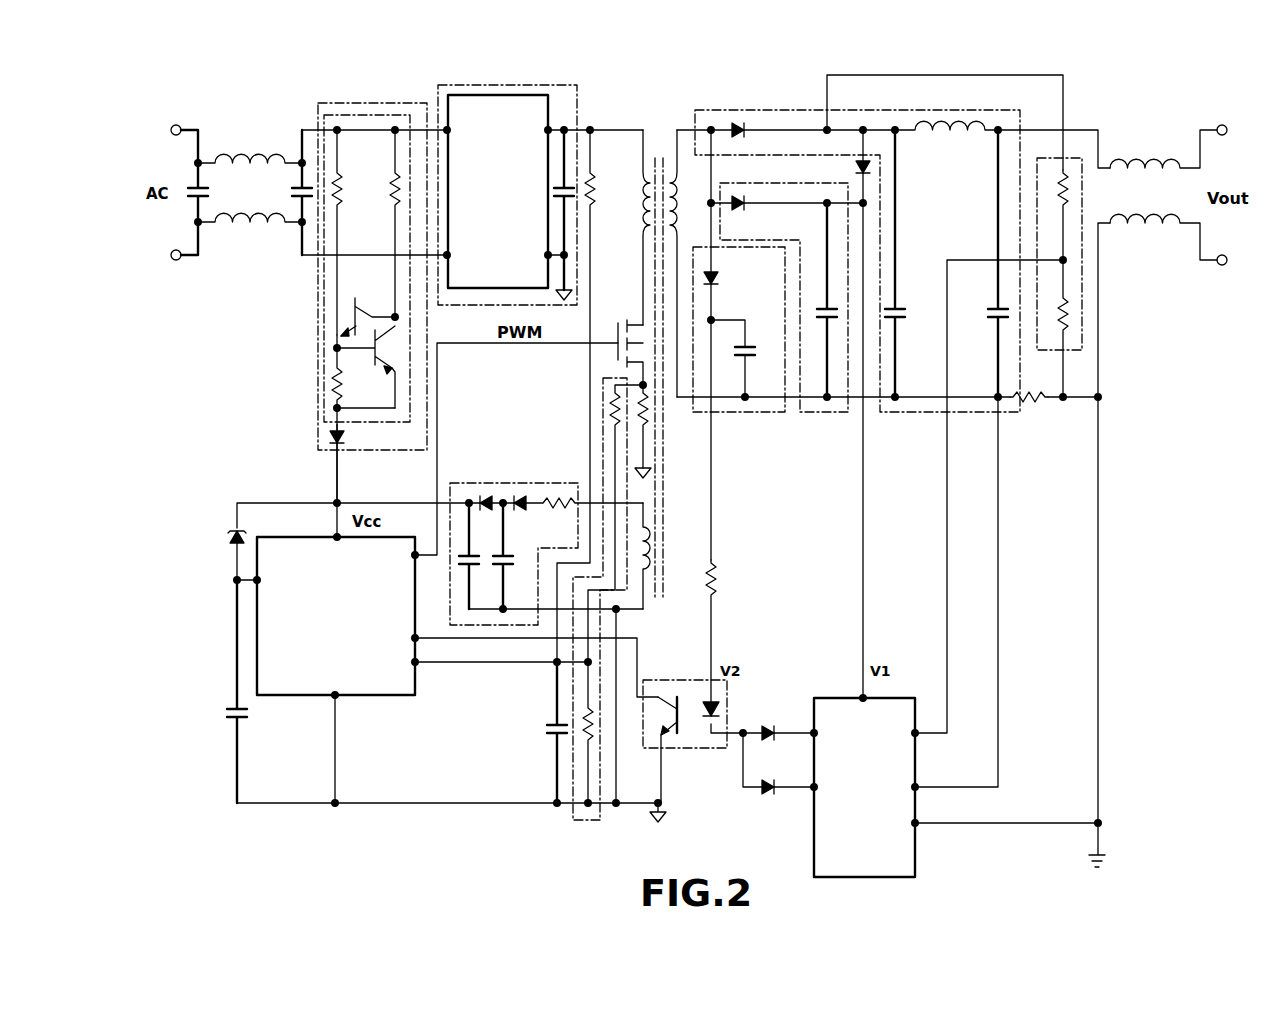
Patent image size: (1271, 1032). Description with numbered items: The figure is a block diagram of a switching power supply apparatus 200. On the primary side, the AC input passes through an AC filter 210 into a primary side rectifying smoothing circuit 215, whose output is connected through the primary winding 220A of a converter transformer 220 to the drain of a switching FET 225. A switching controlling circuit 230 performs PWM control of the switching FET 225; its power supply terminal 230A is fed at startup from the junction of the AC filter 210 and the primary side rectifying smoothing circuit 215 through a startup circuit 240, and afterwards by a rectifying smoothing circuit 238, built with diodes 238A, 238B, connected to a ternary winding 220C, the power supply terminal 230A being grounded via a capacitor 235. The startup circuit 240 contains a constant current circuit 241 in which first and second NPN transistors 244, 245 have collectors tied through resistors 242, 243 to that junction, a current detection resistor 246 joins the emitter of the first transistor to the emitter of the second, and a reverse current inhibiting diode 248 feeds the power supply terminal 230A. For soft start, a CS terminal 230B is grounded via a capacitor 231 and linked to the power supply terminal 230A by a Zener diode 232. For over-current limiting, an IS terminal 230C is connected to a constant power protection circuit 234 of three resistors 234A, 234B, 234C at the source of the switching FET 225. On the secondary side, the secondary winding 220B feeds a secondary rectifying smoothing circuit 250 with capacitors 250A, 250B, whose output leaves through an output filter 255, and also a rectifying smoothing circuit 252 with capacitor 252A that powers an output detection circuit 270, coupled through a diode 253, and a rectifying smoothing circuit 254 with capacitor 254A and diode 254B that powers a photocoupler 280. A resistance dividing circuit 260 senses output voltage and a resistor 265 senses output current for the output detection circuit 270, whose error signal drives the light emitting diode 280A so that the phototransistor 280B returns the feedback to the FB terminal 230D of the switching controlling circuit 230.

The switching power supply apparatus 200 is at (1122, 754).
The AC filter 210 is at (250, 158).
The primary side rectifying smoothing circuit 215 is at (498, 85).
The converter transformer 220 is at (688, 336).
The primary winding 220A is at (645, 190).
The secondary winding 220B is at (672, 188).
The ternary winding 220C is at (652, 548).
The switching FET 225 is at (615, 332).
The switching controlling circuit 230 is at (333, 607).
The power supply terminal 230A is at (335, 535).
The CS terminal 230B is at (253, 578).
The IS terminal 230C is at (418, 668).
The FB terminal 230D is at (418, 642).
The capacitor 231 is at (226, 714).
The Zener diode 232 is at (234, 537).
The constant power protection circuit 234 is at (553, 593).
The resistor 234A is at (612, 395).
The resistor 234B is at (640, 402).
The resistor 234C is at (586, 740).
The capacitor 235 is at (467, 556).
The rectifying smoothing circuit 238 is at (490, 513).
The diode 238A is at (487, 498).
The diode 238B is at (520, 497).
The startup circuit 240 is at (330, 290).
The constant current circuit 241 is at (366, 103).
The resistor 242 is at (342, 186).
The resistor 243 is at (396, 200).
The first NPN transistor 244 is at (352, 308).
The second NPN transistor 245 is at (372, 347).
The current detection resistor 246 is at (337, 386).
The reverse current inhibiting diode 248 is at (348, 436).
The secondary rectifying smoothing circuit 250 is at (857, 298).
The capacitor 250A is at (898, 302).
The capacitor 250B is at (996, 300).
The rectifying smoothing circuit 252 is at (787, 334).
The capacitor 252A is at (827, 300).
The diode 253 is at (852, 170).
The rectifying smoothing circuit 254 is at (748, 345).
The capacitor 254A is at (750, 365).
The diode 254B is at (745, 288).
The output filter 255 is at (1152, 162).
The resistance dividing circuit 260 is at (1082, 296).
The resistor 265 is at (1029, 405).
The output detection circuit 270 is at (812, 835).
The photocoupler 280 is at (731, 721).
The light emitting diode 280A is at (716, 713).
The phototransistor 280B is at (672, 700).